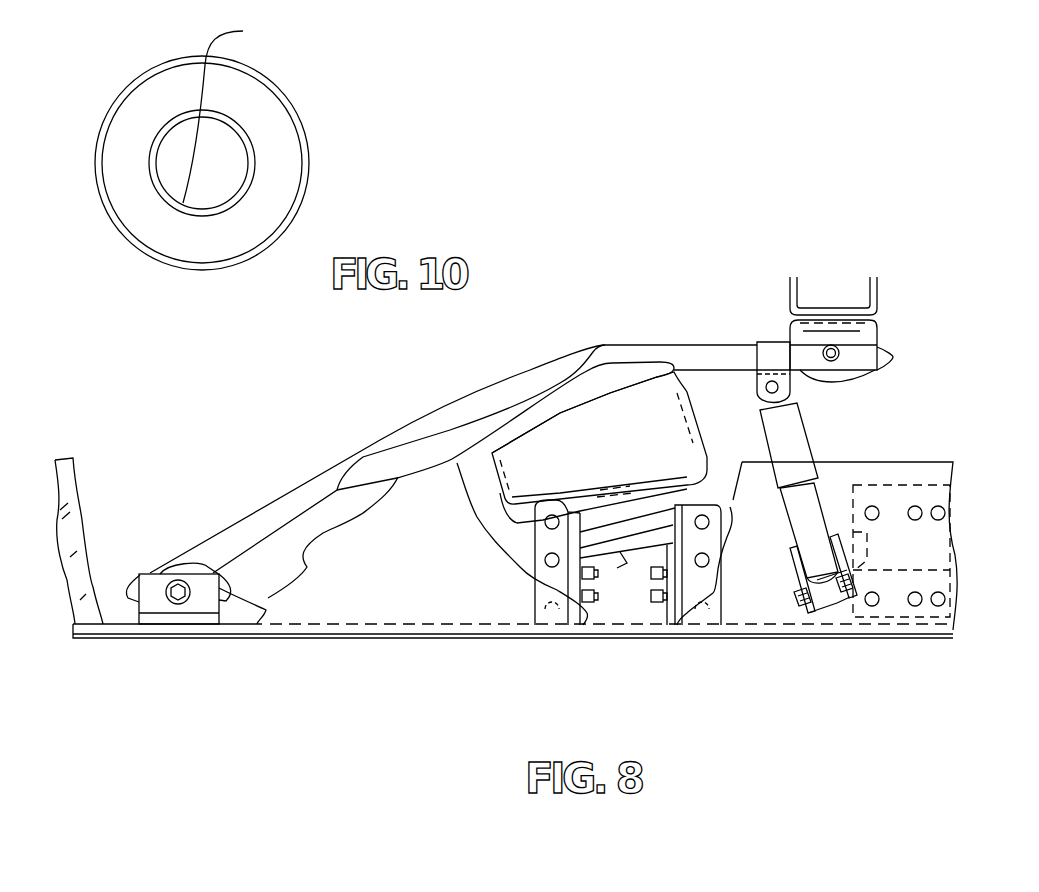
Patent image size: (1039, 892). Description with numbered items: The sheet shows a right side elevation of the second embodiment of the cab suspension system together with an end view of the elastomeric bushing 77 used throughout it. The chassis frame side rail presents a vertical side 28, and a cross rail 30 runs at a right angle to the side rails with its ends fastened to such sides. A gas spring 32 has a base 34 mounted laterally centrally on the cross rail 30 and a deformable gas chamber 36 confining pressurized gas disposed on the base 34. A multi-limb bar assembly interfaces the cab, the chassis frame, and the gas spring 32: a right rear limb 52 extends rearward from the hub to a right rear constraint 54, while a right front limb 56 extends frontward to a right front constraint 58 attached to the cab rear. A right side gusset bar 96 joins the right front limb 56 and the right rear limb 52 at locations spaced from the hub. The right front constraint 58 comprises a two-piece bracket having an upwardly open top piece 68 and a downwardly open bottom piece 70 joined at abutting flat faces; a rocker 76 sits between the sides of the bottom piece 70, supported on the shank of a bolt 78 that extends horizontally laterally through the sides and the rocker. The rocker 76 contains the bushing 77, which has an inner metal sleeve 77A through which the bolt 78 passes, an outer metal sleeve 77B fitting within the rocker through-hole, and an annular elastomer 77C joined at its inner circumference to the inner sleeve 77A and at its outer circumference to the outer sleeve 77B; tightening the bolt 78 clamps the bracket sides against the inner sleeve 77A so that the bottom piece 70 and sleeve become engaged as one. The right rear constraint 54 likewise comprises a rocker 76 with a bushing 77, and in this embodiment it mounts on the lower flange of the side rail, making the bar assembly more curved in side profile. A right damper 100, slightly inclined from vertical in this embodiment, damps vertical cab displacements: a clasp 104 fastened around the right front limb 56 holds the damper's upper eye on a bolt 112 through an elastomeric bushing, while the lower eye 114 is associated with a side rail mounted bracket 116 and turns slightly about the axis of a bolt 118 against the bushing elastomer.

In FIG. 8, the vertical side 28 is at (434, 590).
In FIG. 8, the cross rail 30 is at (663, 547).
In FIG. 8, the gas spring 32 is at (702, 427).
In FIG. 8, the base 34 is at (607, 538).
In FIG. 8, the deformable gas chamber 36 is at (598, 459).
In FIG. 8, the right rear limb 52 is at (267, 497).
In FIG. 8, the right rear constraint 54 is at (140, 573).
In FIG. 8, the right front limb 56 is at (687, 354).
In FIG. 8, the right front constraint 58 is at (897, 329).
In FIG. 8, the top piece 68 is at (878, 289).
In FIG. 8, the bottom piece 70 is at (863, 362).
In FIG. 8, the rocker 76 is at (232, 596).
In FIG. 10, the elastomeric bushing 77 is at (307, 108).
In FIG. 10, the inner metal sleeve 77A is at (239, 111).
In FIG. 10, the outer metal sleeve 77B is at (306, 186).
In FIG. 10, the annular elastomer 77C is at (284, 150).
In FIG. 8, the bolt 78 is at (835, 360).
In FIG. 8, the right side gusset bar 96 is at (442, 460).
In FIG. 8, the right damper 100 is at (790, 524).
In FIG. 8, the clasp 104 is at (773, 350).
In FIG. 8, the bolt 112 is at (766, 387).
In FIG. 8, the lower eye 114 is at (828, 596).
In FIG. 8, the side rail mounted bracket 116 is at (793, 570).
In FIG. 8, the bolt 118 is at (800, 603).